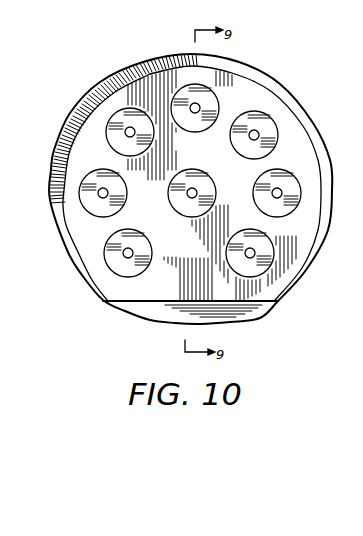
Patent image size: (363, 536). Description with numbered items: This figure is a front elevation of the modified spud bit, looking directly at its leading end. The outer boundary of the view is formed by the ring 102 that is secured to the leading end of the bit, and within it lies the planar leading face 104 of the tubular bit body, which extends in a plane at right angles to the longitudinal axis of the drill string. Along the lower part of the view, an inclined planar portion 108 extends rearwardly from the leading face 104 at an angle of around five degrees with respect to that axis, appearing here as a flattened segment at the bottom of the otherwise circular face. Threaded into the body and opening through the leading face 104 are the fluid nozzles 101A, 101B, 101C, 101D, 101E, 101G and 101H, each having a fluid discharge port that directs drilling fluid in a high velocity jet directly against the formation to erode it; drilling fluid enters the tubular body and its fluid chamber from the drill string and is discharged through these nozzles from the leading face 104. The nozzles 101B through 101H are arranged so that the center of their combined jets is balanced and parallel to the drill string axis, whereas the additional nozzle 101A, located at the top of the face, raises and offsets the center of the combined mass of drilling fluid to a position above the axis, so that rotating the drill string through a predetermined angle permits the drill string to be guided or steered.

The ring 102 is at (243, 62).
The planar leading face 104 is at (158, 82).
The inclined planar portion 108 is at (132, 308).
The fluid nozzle 101A is at (190, 131).
The fluid nozzle 101B is at (126, 155).
The fluid nozzle 101C is at (271, 152).
The fluid nozzle 101D is at (120, 210).
The fluid nozzle 101E is at (185, 170).
The fluid nozzle 101G is at (145, 237).
The fluid nozzle 101H is at (263, 232).